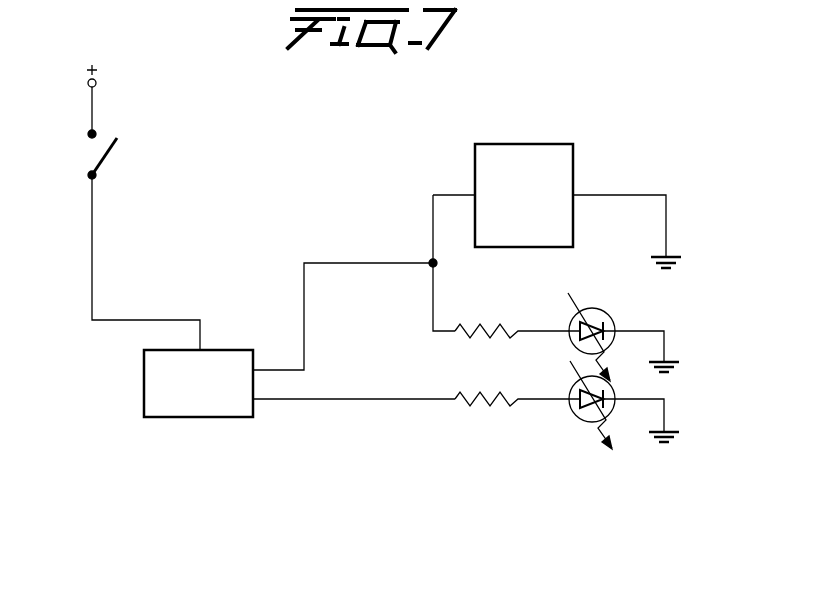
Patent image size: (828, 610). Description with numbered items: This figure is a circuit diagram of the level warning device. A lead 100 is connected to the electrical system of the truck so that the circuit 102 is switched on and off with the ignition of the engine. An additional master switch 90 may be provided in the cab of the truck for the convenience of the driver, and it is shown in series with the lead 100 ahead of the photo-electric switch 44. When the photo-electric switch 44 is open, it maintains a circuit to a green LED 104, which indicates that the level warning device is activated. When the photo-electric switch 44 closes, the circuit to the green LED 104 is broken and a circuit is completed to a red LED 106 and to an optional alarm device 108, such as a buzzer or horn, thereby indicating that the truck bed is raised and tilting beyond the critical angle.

The lead 100 is at (93, 105).
The master switch 90 is at (118, 155).
The photo-electric switch 44 is at (197, 417).
The alarm device 108 is at (575, 175).
The red LED 106 is at (613, 317).
The circuit 102 is at (393, 399).
The green LED 104 is at (583, 425).